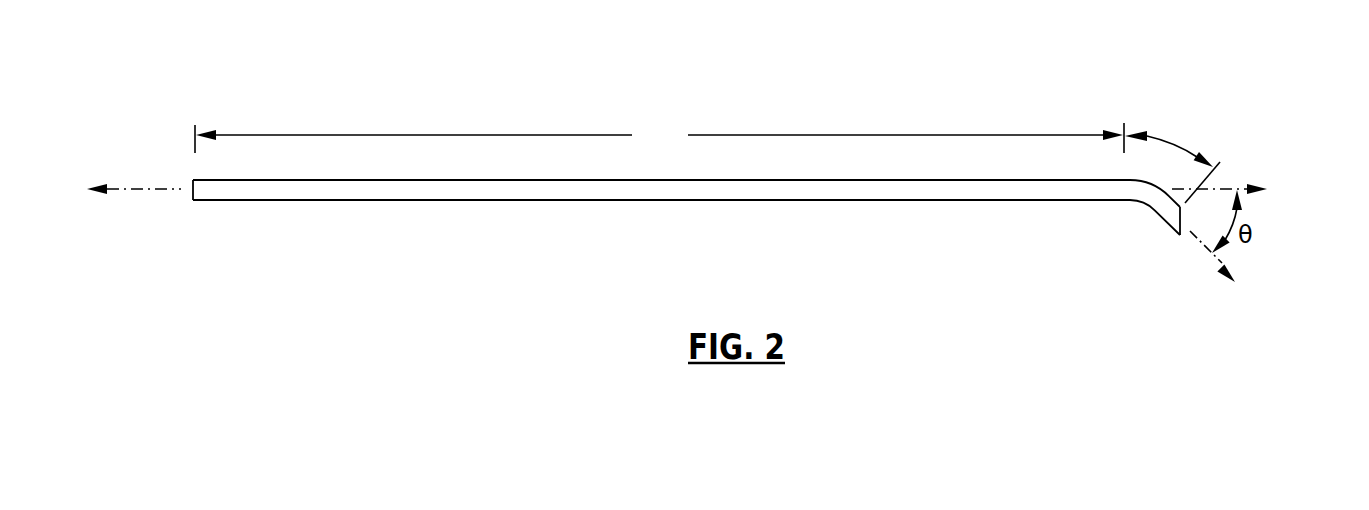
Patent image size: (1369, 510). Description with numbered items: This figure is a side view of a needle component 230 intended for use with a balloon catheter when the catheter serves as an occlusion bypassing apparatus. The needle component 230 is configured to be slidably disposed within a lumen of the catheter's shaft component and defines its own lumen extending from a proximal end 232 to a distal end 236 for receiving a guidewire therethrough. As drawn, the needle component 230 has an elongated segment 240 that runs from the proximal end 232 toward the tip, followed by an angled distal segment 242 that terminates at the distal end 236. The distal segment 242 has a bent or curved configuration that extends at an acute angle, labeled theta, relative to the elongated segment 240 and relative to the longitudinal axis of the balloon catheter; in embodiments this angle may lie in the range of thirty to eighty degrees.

The needle component 230 is at (756, 109).
The proximal end 232 is at (198, 200).
The distal end 236 is at (1186, 218).
The elongated segment 240 is at (659, 137).
The angled distal segment 242 is at (1178, 147).